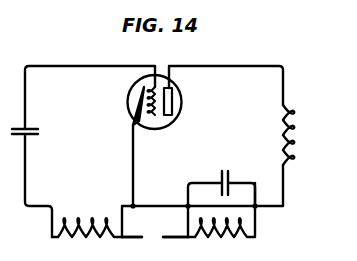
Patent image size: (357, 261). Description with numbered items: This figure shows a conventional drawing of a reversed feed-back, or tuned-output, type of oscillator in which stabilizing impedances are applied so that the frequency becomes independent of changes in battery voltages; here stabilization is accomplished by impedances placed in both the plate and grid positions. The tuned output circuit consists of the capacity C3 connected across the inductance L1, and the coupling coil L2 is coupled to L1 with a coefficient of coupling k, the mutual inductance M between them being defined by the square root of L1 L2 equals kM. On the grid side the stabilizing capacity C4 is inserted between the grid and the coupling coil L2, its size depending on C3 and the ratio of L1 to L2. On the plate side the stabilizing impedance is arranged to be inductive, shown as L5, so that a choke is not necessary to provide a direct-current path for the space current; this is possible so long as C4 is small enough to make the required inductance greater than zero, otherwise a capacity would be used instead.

The capacity C4 is at (37, 131).
The coupling coil L2 is at (87, 221).
The mutual inductance M is at (155, 237).
The inductance L1 is at (221, 210).
The capacity C3 is at (221, 180).
The inductive reactance L5 is at (270, 135).